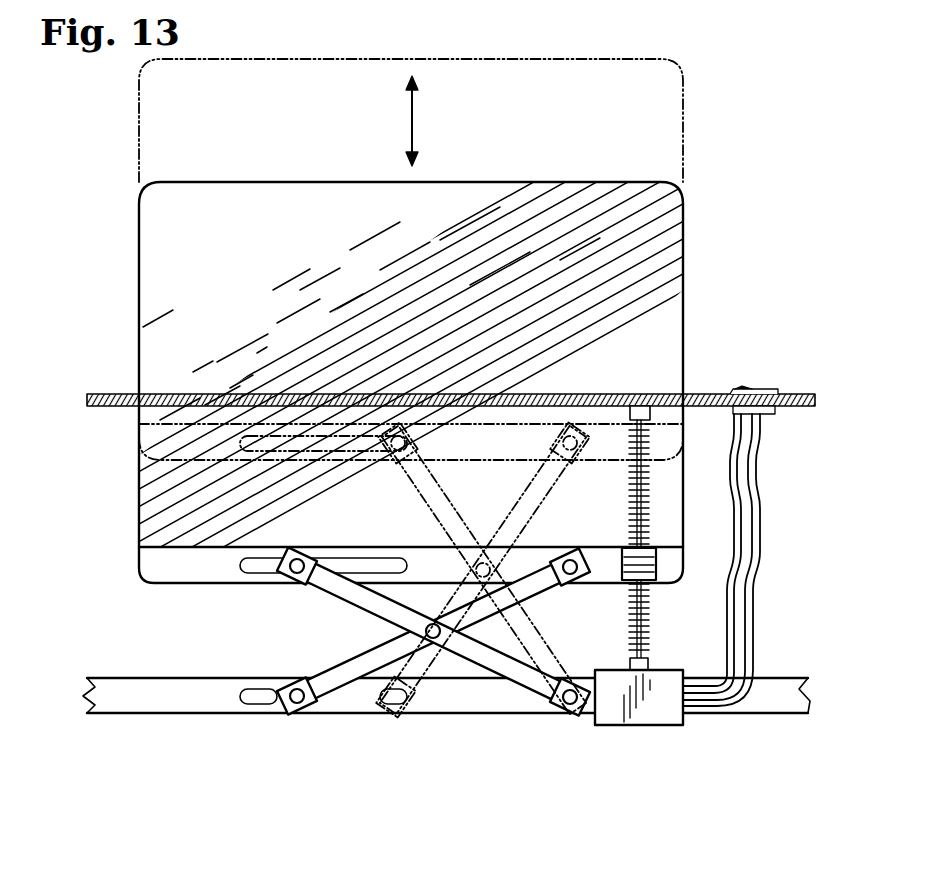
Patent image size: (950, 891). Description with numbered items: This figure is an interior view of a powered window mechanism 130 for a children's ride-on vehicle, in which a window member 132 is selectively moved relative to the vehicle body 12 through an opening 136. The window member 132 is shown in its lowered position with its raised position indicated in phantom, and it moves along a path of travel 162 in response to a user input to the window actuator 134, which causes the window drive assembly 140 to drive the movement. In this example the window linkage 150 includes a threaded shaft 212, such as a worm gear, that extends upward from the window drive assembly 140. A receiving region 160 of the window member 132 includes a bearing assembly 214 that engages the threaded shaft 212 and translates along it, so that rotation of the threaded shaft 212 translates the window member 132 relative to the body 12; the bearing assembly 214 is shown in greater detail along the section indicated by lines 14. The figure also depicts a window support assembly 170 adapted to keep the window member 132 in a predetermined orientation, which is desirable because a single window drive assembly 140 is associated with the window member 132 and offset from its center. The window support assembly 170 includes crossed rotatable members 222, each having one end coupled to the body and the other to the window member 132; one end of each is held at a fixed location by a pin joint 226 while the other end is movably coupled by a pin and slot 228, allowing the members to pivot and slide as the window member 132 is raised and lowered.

The vehicle body 12 is at (106, 388).
The section line indicator 14 is at (633, 538).
The powered window mechanism 130 is at (742, 302).
The window member 132 is at (479, 178).
The window actuator 134 is at (740, 388).
The opening 136 is at (148, 392).
The window drive assembly 140 is at (594, 719).
The window linkage 150 is at (706, 495).
The receiving region 160 is at (658, 565).
The path of travel 162 is at (411, 122).
The window support assembly 170 is at (399, 570).
The threaded shaft 212 is at (650, 497).
The bearing assembly 214 is at (624, 577).
The rotatable members 222 is at (360, 648).
The pin joint 226 is at (575, 559).
The pin and slot 228 is at (243, 562).